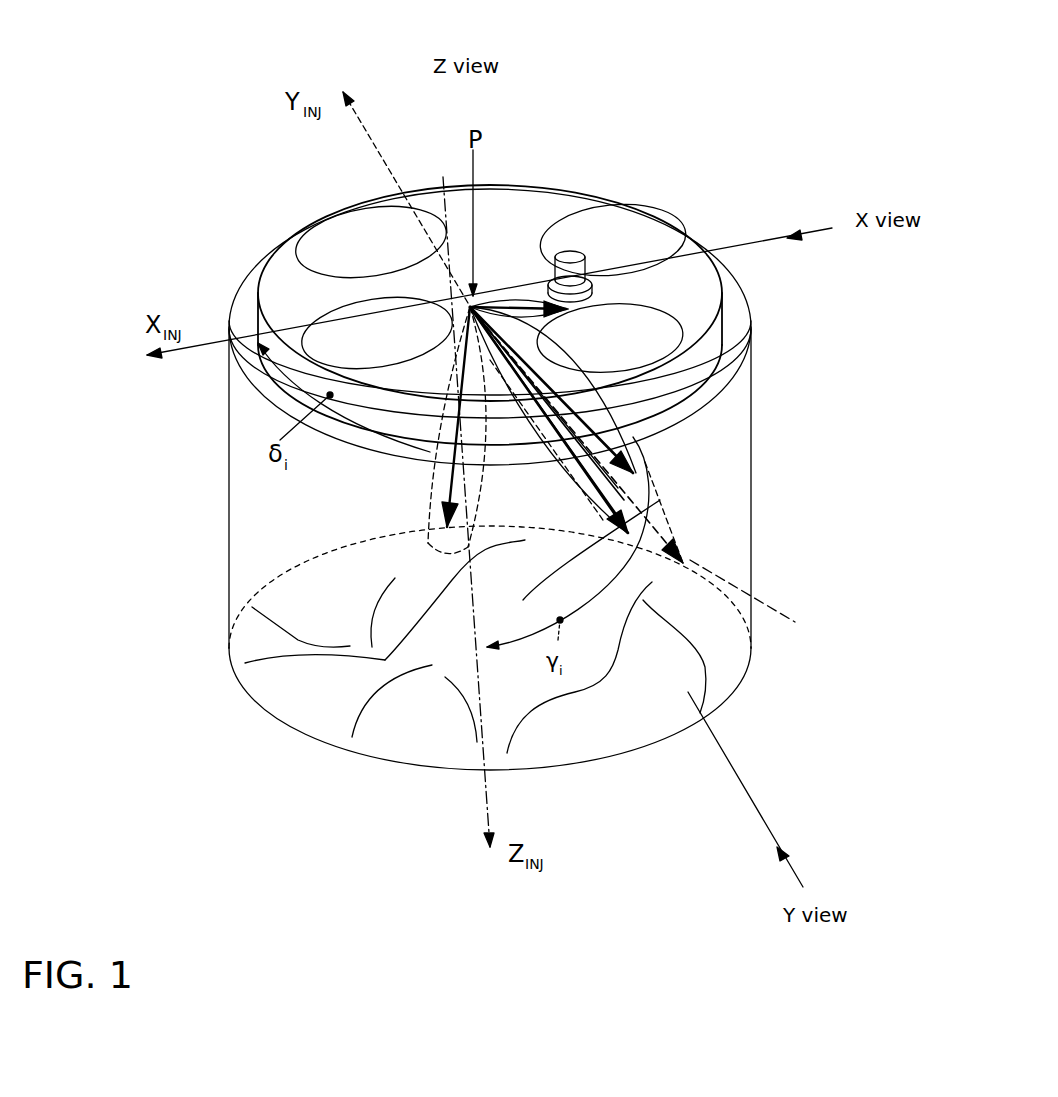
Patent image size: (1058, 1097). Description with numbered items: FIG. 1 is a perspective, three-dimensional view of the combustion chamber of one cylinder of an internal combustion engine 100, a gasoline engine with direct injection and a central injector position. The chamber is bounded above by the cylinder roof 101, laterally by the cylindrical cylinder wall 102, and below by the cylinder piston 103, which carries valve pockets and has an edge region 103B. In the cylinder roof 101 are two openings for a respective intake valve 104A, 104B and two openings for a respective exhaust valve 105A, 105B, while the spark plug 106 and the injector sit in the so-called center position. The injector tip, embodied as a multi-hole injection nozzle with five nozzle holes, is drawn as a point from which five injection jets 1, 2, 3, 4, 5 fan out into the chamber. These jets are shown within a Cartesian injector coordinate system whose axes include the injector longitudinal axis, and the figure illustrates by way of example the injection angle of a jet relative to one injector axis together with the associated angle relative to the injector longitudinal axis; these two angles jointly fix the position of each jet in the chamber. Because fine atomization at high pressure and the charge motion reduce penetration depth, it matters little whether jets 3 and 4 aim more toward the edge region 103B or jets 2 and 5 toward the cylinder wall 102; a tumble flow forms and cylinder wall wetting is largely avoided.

The internal combustion engine 100 is at (624, 97).
The cylinder roof 101 is at (690, 272).
The cylinder wall 102 is at (229, 522).
The cylinder piston 103 is at (478, 656).
The edge region 103B is at (338, 697).
The intake valve 104A is at (337, 238).
The intake valve 104B is at (333, 311).
The exhaust valve 105A is at (590, 218).
The exhaust valve 105B is at (615, 320).
The spark plug 106 is at (587, 258).
The injection jet 1 is at (445, 496).
The injection jet 2 is at (652, 432).
The injection jet 3 is at (582, 475).
The injection jet 4 is at (652, 527).
The injection jet 5 is at (500, 306).